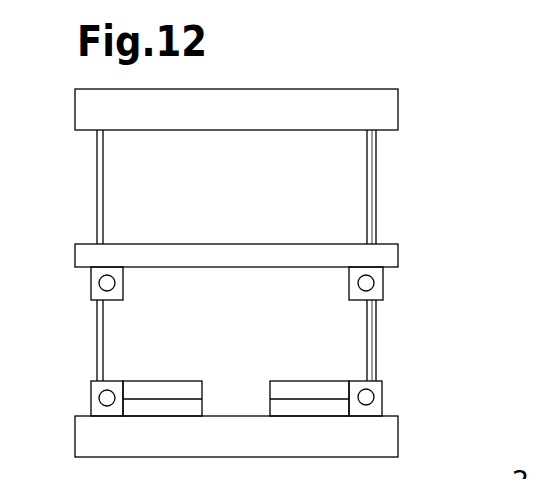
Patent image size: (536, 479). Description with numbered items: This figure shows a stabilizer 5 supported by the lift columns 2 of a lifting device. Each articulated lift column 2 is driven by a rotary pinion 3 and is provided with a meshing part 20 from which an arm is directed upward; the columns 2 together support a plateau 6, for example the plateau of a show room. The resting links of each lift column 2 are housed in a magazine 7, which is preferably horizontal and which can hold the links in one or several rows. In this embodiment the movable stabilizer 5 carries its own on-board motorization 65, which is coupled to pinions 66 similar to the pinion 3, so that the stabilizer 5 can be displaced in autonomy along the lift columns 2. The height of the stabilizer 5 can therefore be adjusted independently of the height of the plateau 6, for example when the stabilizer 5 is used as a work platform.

The lift column 2 is at (97, 160).
The rotary pinion 3 is at (100, 398).
The stabilizer 5 is at (223, 244).
The plateau 6 is at (236, 121).
The magazine 7 is at (307, 390).
The meshing part 20 is at (91, 409).
The on-board motorization 65 is at (91, 277).
The pinion 66 is at (115, 283).